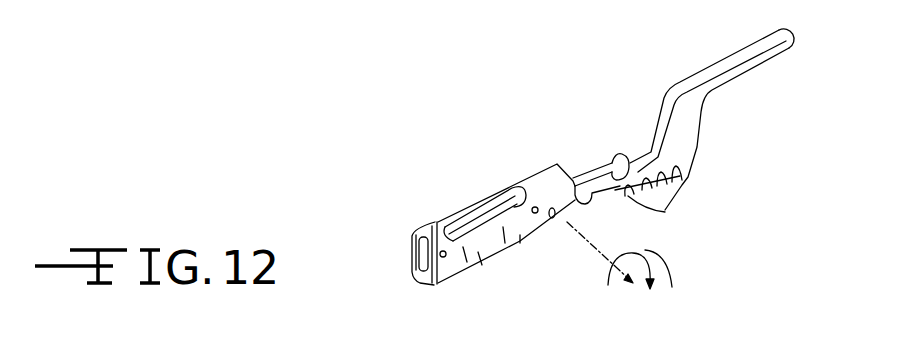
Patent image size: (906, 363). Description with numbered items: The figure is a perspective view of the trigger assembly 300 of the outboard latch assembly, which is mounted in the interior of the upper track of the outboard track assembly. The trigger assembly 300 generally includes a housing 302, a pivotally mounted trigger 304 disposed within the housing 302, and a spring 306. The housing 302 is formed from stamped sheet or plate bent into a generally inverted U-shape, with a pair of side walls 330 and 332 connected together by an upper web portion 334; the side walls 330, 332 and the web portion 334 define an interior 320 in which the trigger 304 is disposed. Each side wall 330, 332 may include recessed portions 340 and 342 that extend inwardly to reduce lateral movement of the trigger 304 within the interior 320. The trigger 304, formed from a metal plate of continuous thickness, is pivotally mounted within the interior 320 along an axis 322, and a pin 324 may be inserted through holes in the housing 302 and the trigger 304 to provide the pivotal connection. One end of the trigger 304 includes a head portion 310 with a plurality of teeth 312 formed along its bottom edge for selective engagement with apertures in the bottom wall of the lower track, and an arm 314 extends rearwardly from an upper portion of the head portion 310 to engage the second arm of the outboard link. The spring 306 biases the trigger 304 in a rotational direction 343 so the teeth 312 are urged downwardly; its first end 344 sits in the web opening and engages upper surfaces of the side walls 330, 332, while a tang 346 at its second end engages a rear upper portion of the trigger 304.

The trigger assembly 300 is at (535, 53).
The housing 302 is at (520, 243).
The trigger 304 is at (658, 117).
The spring 306 is at (452, 225).
The head portion 310 is at (688, 132).
The teeth 312 is at (658, 207).
The arm 314 is at (751, 42).
The interior 320 is at (410, 273).
The axis 322 is at (600, 269).
The pin 324 is at (553, 220).
The side wall 330 is at (410, 252).
The side wall 332 is at (447, 278).
The upper web portion 334 is at (425, 230).
The recessed portion 340 is at (481, 254).
The recessed portion 342 is at (583, 208).
The rotational direction 343 is at (651, 282).
The first end 344 is at (513, 187).
The tang 346 is at (615, 155).